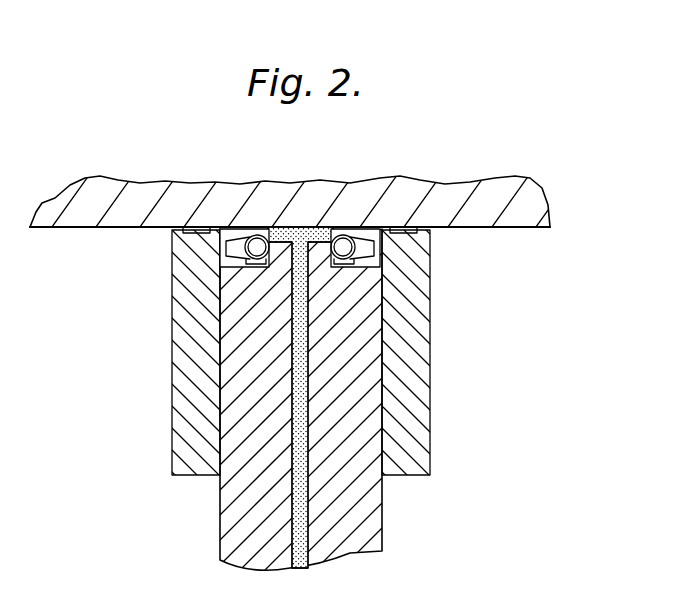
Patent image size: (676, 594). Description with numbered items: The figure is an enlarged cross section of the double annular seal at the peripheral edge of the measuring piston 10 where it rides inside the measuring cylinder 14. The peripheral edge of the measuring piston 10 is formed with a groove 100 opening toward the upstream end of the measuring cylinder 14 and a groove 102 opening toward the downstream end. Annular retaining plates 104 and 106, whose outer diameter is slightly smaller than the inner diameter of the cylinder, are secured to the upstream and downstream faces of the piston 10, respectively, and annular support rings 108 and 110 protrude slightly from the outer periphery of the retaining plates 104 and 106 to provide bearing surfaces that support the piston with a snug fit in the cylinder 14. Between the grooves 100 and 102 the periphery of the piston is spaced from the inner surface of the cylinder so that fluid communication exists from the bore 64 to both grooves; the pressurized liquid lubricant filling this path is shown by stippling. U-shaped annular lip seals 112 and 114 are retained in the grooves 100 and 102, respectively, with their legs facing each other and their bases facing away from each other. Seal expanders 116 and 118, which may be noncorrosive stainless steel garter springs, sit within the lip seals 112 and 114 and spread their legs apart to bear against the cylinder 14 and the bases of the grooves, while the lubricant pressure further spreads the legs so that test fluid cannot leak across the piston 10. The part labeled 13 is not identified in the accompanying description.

The measuring piston 10 is at (367, 517).
The housing 13 is at (172, 357).
The measuring cylinder 14 is at (458, 228).
The bore 64 is at (297, 511).
The groove 100 is at (368, 264).
The groove 102 is at (227, 264).
The annular retaining plate 104 is at (420, 364).
The annular retaining plate 106 is at (172, 408).
The annular support ring 108 is at (405, 228).
The annular support ring 110 is at (193, 228).
The U-shaped annular lip seal 112 is at (382, 291).
The U-shaped annular lip seal 114 is at (226, 259).
The seal expander 116 is at (343, 262).
The seal expander 118 is at (257, 262).